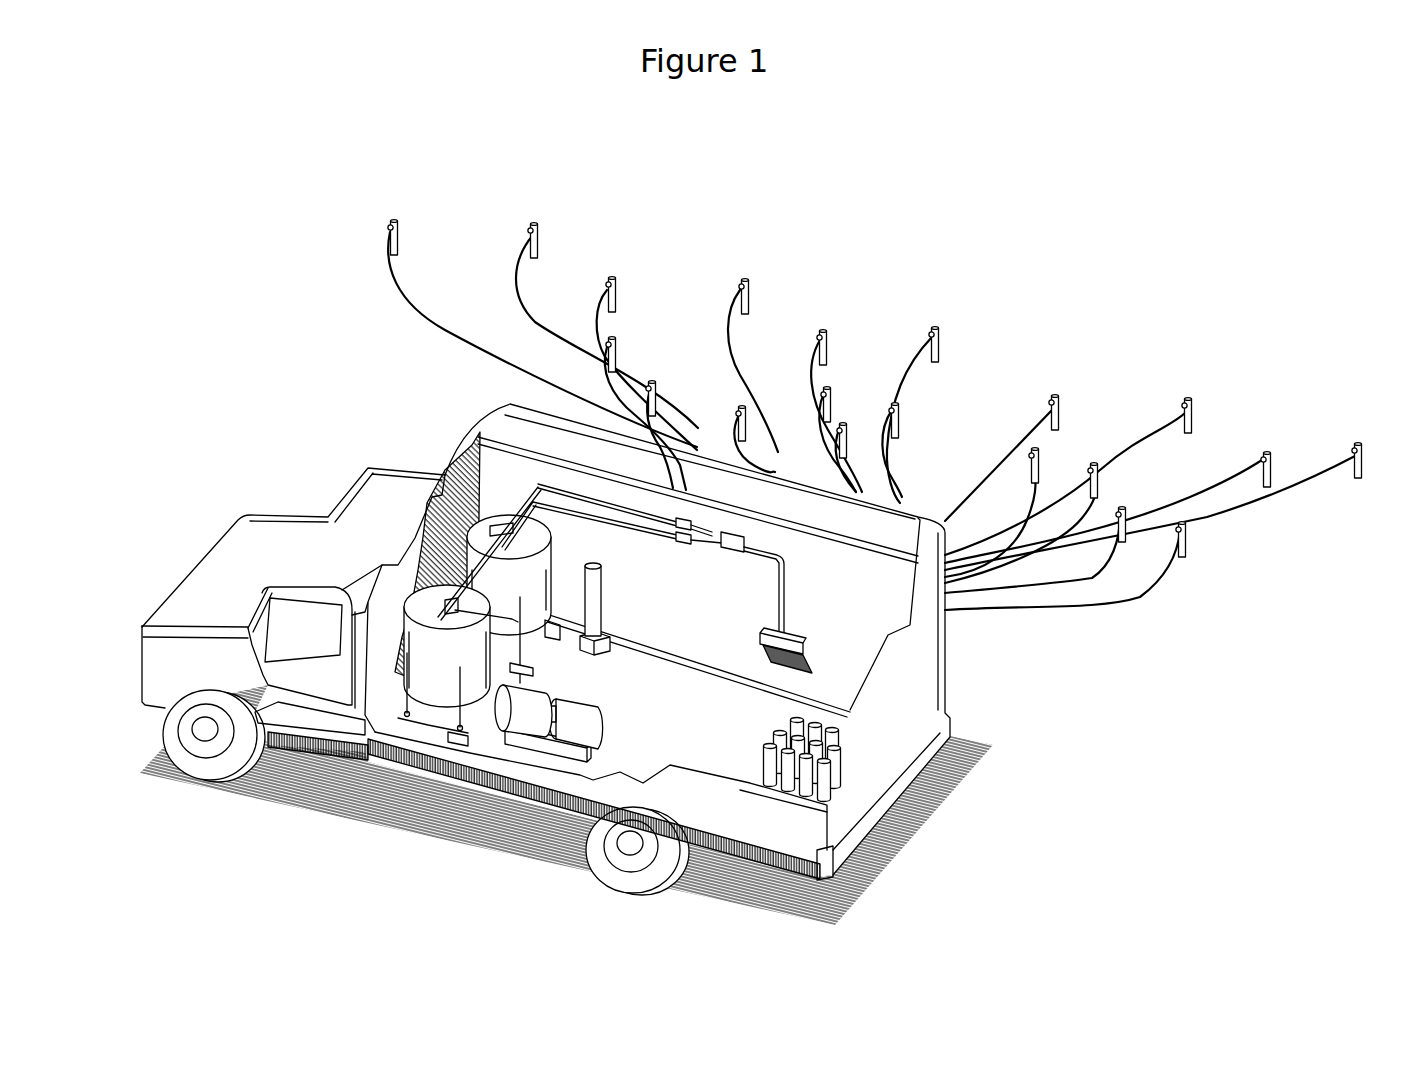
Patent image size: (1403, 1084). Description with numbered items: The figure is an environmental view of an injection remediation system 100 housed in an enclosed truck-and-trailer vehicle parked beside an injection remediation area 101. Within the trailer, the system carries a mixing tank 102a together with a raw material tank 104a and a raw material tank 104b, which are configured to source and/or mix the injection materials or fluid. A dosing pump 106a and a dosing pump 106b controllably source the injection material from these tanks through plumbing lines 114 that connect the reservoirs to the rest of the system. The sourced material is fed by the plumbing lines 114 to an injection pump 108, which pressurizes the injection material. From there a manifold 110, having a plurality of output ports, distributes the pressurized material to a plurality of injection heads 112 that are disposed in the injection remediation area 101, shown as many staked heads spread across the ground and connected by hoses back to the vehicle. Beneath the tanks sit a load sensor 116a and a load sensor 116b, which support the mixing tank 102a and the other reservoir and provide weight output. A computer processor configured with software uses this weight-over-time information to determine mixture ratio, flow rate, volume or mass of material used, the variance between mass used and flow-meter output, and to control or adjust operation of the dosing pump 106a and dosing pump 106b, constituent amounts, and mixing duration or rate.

The injection remediation system 100 is at (982, 178).
The injection remediation area 101 is at (1000, 372).
The mixing tank 102a is at (435, 675).
The raw material tank 104a is at (513, 713).
The raw material tank 104b is at (597, 593).
The dosing pump 106a is at (682, 522).
The dosing pump 106b is at (683, 545).
The injection pump 108 is at (730, 534).
The manifold 110 is at (800, 648).
The injection heads 112 is at (1060, 425).
The plumbing lines 114 is at (527, 500).
The load sensor 116a is at (463, 733).
The load sensor 116b is at (497, 702).